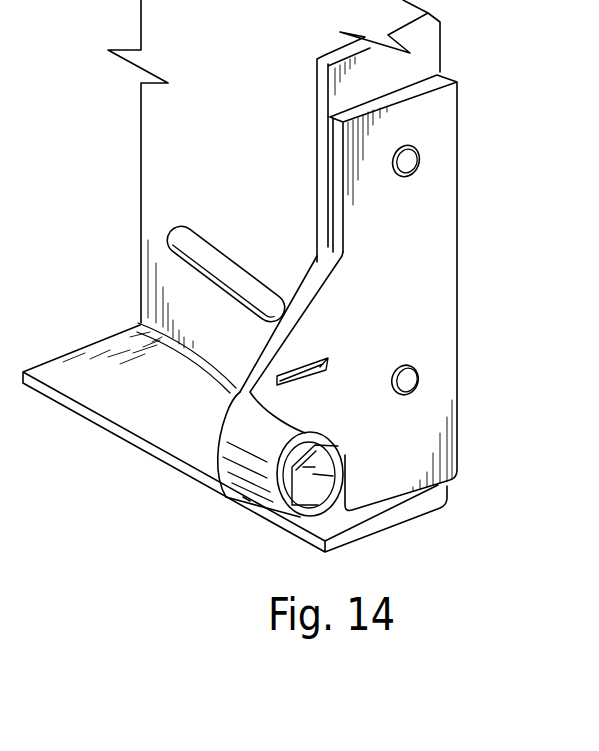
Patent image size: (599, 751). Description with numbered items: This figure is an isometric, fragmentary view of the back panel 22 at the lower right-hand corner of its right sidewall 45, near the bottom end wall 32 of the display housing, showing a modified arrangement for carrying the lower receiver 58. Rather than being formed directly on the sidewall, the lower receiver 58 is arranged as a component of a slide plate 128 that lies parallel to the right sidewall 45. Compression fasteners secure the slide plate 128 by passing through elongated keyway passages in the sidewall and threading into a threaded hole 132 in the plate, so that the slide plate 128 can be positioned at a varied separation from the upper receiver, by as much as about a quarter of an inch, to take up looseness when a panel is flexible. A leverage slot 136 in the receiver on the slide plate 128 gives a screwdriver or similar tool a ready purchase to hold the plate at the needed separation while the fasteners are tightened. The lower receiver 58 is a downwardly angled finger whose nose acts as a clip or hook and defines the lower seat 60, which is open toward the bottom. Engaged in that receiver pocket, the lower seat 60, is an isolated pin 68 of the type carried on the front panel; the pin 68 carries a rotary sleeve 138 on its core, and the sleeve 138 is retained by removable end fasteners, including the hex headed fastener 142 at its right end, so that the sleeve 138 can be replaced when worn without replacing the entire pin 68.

The back panel 22 is at (255, 47).
The right sidewall 45 is at (333, 103).
The slide plate 128 is at (330, 213).
The threaded hole 132 is at (404, 167).
The leverage slot 136 is at (302, 362).
The bottom end wall 32 is at (106, 399).
The lower receiver 58 is at (258, 405).
The lower seat 60 is at (328, 431).
The hex headed fastener 142 is at (323, 463).
The sleeve 138 is at (203, 462).
The pin 68 is at (240, 503).